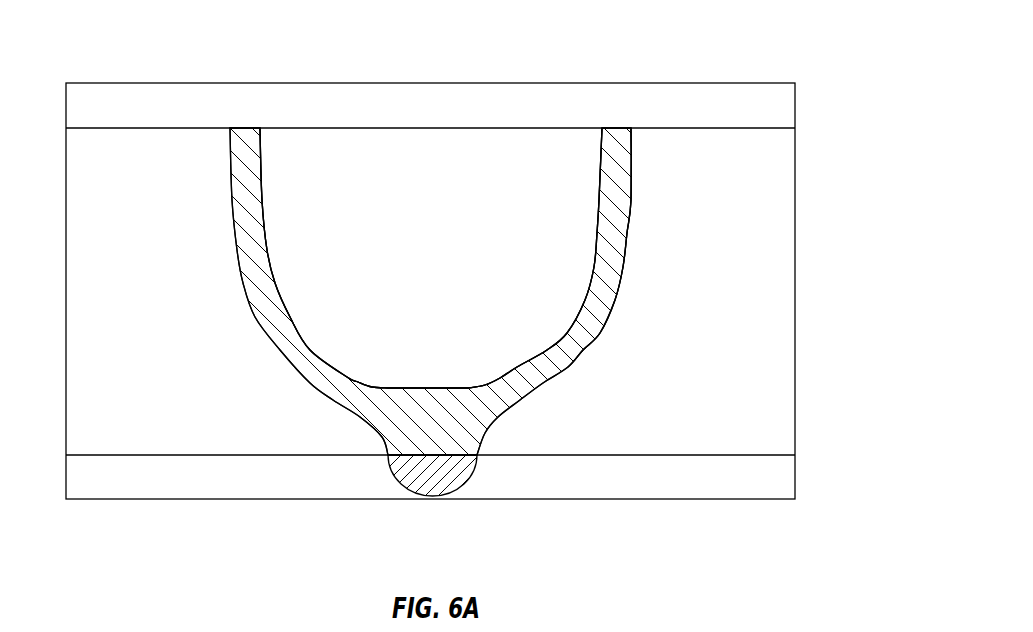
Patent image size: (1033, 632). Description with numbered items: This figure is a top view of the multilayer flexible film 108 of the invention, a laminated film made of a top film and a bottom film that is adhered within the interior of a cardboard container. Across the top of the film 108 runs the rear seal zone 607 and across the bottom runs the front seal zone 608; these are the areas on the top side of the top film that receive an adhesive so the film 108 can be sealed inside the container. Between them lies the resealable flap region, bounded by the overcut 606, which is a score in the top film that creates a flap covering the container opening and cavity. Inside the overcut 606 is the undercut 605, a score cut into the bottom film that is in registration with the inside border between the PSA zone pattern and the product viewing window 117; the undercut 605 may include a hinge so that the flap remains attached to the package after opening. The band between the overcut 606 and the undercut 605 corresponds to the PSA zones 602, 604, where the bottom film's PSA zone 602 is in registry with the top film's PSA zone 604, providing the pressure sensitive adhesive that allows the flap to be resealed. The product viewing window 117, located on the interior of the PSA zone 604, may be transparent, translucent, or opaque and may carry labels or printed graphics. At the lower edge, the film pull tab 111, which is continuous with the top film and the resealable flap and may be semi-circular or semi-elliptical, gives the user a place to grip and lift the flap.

The film layer 108 is at (632, 54).
The product viewing window 117 is at (582, 193).
The rear seal zone 607 is at (782, 103).
The overcut 606 is at (631, 203).
The undercut 605 is at (593, 258).
The PSA zone of the bottom film 602 is at (595, 303).
The PSA zone of the top film 604 is at (545, 291).
The front seal zone 608 is at (782, 484).
The film pull tab 111 is at (462, 462).